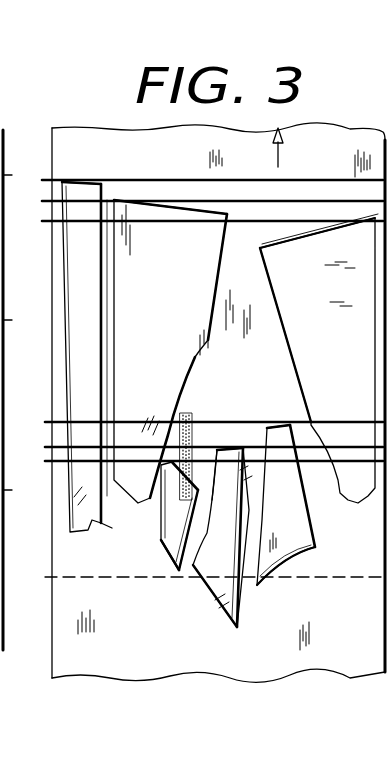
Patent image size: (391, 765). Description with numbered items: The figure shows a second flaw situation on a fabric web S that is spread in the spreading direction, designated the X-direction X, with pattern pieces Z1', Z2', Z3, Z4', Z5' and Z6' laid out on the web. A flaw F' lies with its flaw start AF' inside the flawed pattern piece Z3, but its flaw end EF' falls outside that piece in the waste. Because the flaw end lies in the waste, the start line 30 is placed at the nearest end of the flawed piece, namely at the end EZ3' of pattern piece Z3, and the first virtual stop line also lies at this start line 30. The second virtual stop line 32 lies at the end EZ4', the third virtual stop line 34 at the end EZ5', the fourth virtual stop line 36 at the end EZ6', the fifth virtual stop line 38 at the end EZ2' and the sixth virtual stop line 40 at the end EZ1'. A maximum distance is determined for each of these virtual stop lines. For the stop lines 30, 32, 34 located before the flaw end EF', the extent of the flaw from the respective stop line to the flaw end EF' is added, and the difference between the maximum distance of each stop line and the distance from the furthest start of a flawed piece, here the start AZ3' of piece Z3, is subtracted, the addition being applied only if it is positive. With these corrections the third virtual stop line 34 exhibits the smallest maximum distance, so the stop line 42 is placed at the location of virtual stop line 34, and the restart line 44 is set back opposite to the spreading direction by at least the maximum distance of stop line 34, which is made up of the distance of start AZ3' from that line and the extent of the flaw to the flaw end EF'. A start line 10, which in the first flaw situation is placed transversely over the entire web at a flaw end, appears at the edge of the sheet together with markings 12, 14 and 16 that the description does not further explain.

The start line 10 is at (5, 342).
The frame marker 12 is at (5, 338).
The frame marker 14 is at (5, 320).
The frame marker 16 is at (11, 289).
The start line 30 is at (45, 461).
The second virtual stop line 32 is at (45, 461).
The third virtual stop line 34 is at (45, 447).
The fourth virtual stop line 36 is at (42, 221).
The fifth virtual stop line 38 is at (42, 201).
The sixth virtual stop line 40 is at (42, 180).
The stop line 42 is at (46, 422).
The restart line 44 is at (45, 577).
The spreading direction X is at (283, 148).
The fabric web S is at (362, 654).
The pattern piece Z1' is at (87, 357).
The pattern piece Z2' is at (167, 351).
The flawed pattern piece Z3 is at (180, 537).
The pattern piece Z4' is at (221, 537).
The pattern piece Z5' is at (286, 505).
The pattern piece Z6' is at (319, 358).
The end of pattern piece Z 1' EZ1' is at (81, 164).
The end of pattern piece Z 2' EZ2' is at (170, 183).
The end of flawed pattern piece Z 3' EZ3' is at (157, 460).
The end of pattern piece Z 4' EZ4' is at (235, 422).
The end of pattern piece Z 5' EZ5' is at (277, 404).
The end of pattern piece Z 6' EZ6' is at (317, 216).
The flaw end EF' is at (172, 427).
The flaw F' is at (209, 448).
The flaw start AF' is at (160, 474).
The start of flawed pattern piece Z 3' AZ3' is at (164, 578).